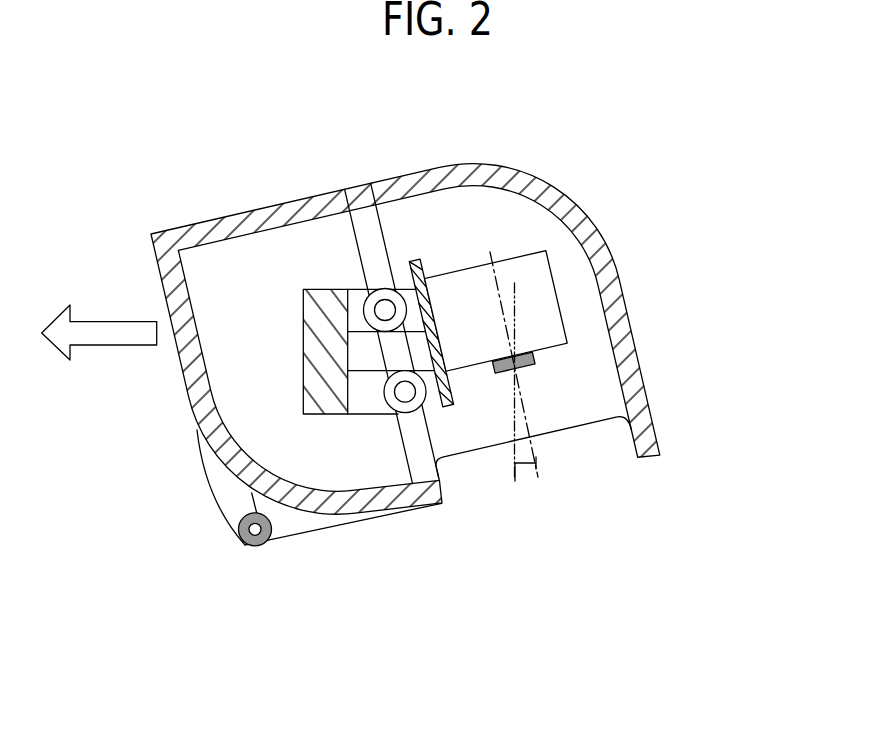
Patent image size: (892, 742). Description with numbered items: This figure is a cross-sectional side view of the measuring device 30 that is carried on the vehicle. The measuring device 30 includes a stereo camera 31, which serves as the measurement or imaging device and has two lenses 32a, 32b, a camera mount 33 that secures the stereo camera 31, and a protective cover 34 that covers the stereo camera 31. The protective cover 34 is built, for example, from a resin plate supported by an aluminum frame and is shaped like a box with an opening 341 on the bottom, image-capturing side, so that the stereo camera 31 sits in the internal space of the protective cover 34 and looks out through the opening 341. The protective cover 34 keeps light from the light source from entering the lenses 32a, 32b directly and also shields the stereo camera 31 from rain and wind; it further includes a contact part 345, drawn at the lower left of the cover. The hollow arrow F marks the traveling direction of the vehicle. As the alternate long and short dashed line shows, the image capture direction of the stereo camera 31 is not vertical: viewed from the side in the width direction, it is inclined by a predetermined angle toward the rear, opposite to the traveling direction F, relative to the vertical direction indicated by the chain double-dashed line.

The measuring device 30 is at (87, 113).
The stereo camera 31 is at (567, 320).
The lens 32a is at (663, 378).
The lens 32b is at (538, 358).
The camera mount 33 is at (323, 300).
The protective cover 34 is at (550, 183).
The opening 341 is at (560, 457).
The contact part 345 is at (247, 537).
The traveling direction F is at (146, 347).